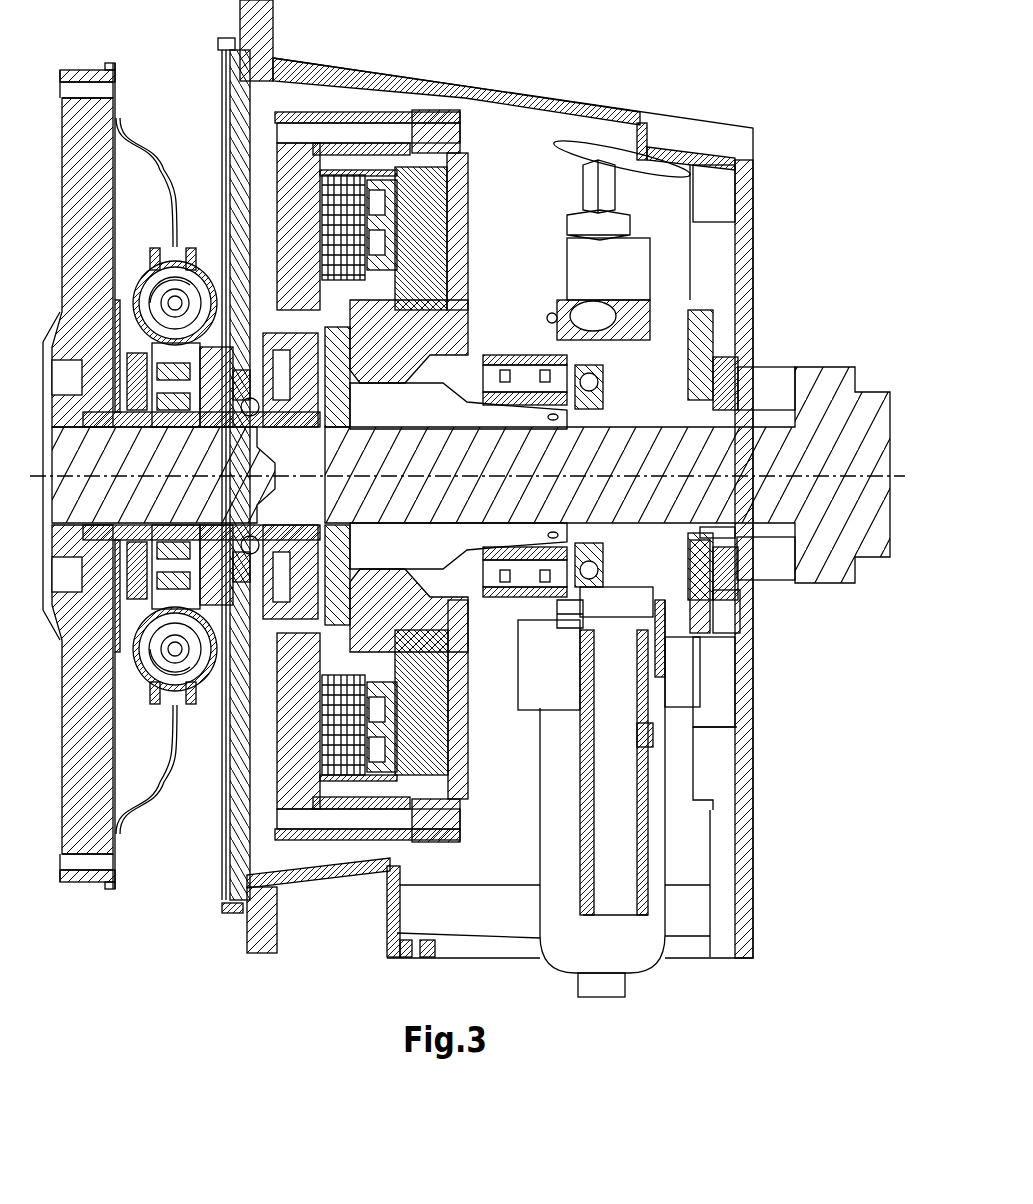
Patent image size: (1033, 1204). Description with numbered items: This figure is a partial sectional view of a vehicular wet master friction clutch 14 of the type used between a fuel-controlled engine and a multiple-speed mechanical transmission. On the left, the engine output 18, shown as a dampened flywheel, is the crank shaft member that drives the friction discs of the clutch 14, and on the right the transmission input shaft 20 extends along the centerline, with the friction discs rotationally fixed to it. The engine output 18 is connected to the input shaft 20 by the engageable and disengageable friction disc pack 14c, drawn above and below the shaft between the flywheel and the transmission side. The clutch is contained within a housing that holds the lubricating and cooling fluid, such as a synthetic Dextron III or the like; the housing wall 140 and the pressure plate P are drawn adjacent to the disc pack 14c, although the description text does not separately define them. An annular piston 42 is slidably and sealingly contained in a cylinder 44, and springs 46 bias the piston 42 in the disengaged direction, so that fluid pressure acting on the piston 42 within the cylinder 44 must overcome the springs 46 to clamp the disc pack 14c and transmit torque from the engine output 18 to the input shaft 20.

The wet master friction clutch 14 is at (693, 80).
The housing wall 140 is at (532, 99).
The friction disc pack 14c is at (343, 846).
The engine output 18 is at (98, 224).
The input shaft 20 is at (868, 426).
The annular piston 42 is at (432, 712).
The cylinder 44 is at (405, 765).
The springs 46 is at (365, 628).
The pressure plate P is at (432, 112).